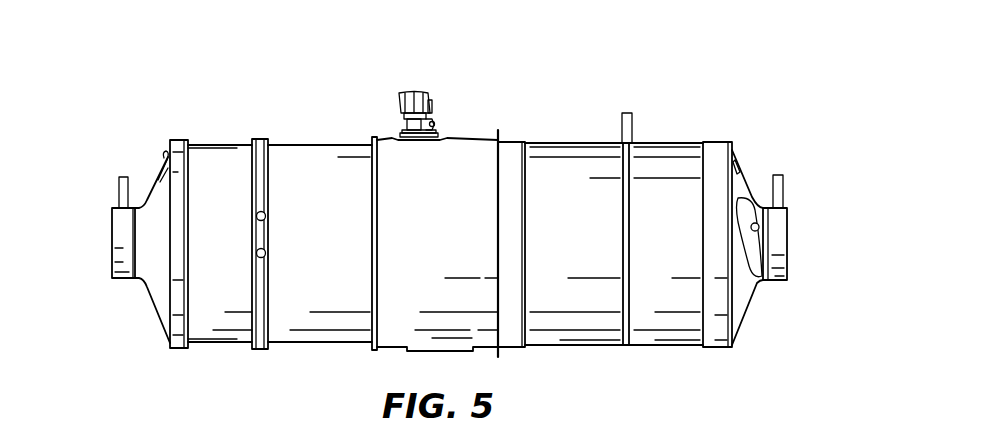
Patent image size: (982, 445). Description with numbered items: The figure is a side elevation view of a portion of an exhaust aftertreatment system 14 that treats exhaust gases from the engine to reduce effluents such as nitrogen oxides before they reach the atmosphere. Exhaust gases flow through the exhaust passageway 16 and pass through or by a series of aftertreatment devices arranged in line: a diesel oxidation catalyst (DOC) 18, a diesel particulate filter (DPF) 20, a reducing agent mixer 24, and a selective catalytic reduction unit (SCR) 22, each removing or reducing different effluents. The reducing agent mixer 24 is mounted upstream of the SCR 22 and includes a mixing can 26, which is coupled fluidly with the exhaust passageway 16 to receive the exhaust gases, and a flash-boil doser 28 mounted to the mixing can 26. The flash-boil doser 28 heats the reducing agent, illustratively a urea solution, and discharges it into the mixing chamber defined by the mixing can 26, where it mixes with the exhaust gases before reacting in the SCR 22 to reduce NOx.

The exhaust aftertreatment system 14 is at (789, 88).
The exhaust passageway 16 is at (101, 242).
The diesel oxidation catalyst (DOC) 18 is at (219, 133).
The diesel particulate filter (DPF) 20 is at (305, 133).
The selective catalytic reduction unit (SCR) 22 is at (564, 126).
The reducing agent mixer 24 is at (394, 57).
The mixing can 26 is at (462, 133).
The flash-boil doser 28 is at (390, 95).